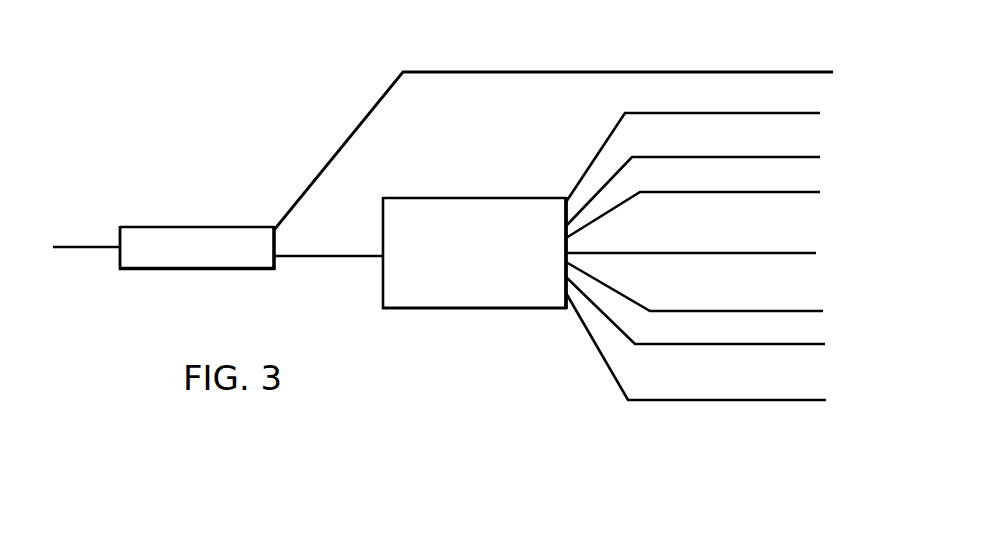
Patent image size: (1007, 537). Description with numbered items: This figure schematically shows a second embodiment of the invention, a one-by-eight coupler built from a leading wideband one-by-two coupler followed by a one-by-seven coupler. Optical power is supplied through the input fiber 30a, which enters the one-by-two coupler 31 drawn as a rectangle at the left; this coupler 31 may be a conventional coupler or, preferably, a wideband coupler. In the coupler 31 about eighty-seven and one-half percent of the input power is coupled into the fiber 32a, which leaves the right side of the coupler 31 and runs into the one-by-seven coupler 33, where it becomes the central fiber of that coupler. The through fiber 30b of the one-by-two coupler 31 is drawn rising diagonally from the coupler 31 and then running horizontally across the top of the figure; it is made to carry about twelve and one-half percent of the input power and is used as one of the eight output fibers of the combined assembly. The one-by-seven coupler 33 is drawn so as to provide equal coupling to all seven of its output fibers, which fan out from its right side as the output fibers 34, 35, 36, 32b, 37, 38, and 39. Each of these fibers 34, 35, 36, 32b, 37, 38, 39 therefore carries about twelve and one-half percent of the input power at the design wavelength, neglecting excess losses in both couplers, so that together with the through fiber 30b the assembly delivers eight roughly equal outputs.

The input fiber 30a is at (95, 247).
The through fiber of the 1×2 coupler 30b is at (424, 70).
The 1×2 coupler 31 is at (218, 226).
The fiber 32a is at (305, 258).
The output fiber 32b is at (717, 254).
The 1×7 coupler 33 is at (461, 197).
The output fiber 34 is at (710, 152).
The output fiber 35 is at (710, 186).
The output fiber 36 is at (710, 209).
The output fiber 37 is at (713, 294).
The output fiber 38 is at (713, 318).
The output fiber 39 is at (713, 354).